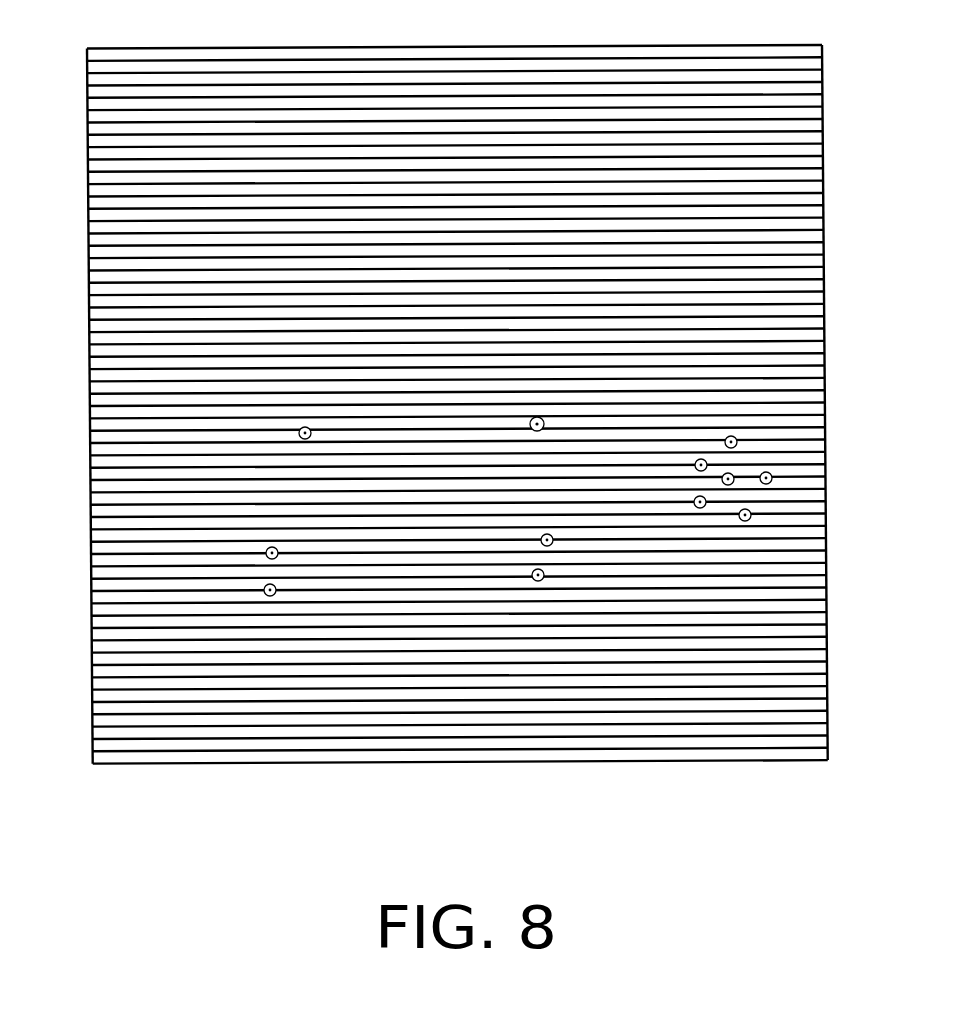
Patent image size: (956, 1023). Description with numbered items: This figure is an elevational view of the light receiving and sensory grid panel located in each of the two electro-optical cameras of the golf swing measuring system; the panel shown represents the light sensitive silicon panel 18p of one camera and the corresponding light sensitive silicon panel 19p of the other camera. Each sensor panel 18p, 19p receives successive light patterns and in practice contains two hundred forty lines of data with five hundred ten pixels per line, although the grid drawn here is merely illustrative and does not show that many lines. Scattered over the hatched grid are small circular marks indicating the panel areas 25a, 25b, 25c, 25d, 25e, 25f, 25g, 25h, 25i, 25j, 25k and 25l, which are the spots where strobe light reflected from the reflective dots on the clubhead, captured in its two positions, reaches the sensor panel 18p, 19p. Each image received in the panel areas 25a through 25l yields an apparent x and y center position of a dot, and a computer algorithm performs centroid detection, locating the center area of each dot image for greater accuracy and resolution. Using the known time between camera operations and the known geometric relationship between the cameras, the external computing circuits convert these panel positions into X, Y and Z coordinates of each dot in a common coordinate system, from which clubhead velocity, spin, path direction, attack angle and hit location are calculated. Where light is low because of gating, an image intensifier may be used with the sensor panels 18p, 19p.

The light sensitive silicon panel 18p is at (424, 383).
The light sensitive silicon panel 19p is at (163, 48).
The panel area 25a is at (299, 429).
The panel area 25b is at (267, 549).
The panel area 25c is at (265, 593).
The panel area 25d is at (544, 422).
The panel area 25e is at (541, 541).
The panel area 25f is at (539, 581).
The panel area 25g is at (736, 438).
The panel area 25h is at (734, 476).
The panel area 25i is at (772, 478).
The panel area 25j is at (751, 515).
The panel area 25k is at (703, 507).
The panel area 25l is at (707, 465).